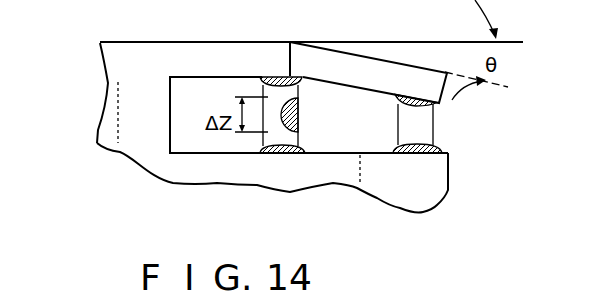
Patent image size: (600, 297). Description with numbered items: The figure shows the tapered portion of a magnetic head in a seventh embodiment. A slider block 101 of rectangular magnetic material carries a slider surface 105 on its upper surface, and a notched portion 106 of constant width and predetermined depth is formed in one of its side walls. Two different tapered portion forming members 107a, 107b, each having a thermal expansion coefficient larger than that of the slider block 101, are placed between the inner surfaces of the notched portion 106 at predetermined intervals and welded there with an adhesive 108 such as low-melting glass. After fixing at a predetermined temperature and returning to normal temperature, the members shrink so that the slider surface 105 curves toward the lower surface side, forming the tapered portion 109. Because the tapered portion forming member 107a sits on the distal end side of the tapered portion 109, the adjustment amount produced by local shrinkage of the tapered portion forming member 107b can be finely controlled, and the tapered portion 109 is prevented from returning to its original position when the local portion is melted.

The slider block 101 is at (120, 157).
The slider surface 105 is at (157, 42).
The notched portion 106 is at (190, 140).
The tapered portion forming member 107a is at (420, 128).
The tapered portion forming member 107b is at (266, 137).
The adhesive 108 is at (268, 77).
The tapered portion 109 is at (397, 62).